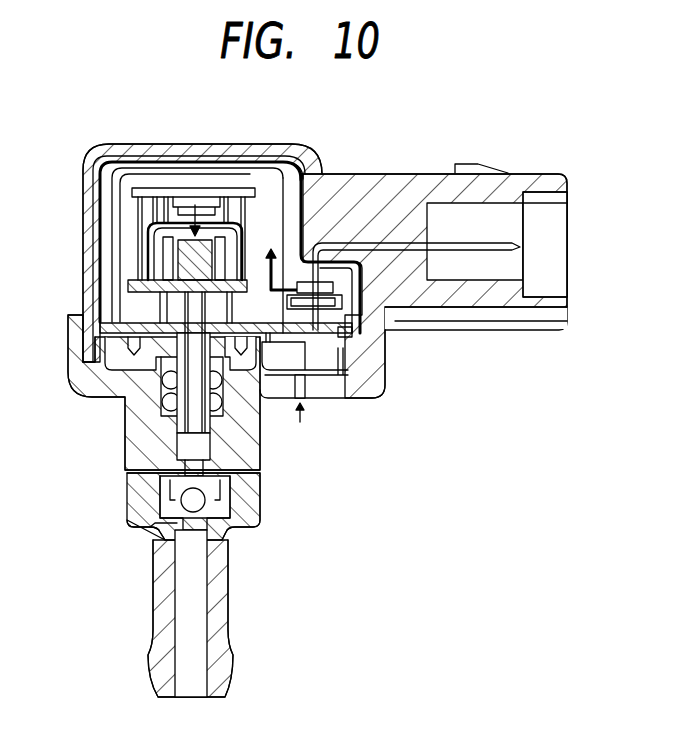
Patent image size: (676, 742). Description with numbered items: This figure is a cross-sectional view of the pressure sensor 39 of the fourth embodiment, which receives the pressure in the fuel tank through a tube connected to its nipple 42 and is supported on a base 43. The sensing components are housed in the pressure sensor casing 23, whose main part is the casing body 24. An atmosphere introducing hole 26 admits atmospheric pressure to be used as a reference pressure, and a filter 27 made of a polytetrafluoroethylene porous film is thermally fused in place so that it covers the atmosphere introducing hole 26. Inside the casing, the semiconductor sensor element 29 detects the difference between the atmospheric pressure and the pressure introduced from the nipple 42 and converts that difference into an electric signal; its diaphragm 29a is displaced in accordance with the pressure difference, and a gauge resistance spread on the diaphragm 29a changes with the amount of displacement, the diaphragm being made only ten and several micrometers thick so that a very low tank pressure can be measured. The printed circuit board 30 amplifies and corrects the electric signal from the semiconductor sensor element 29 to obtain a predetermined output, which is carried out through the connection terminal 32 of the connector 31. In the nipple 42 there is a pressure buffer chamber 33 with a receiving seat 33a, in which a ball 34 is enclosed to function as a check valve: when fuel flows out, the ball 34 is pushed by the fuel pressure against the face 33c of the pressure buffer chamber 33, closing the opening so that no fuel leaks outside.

The pressure sensor casing 23 is at (83, 172).
The casing body 24 is at (400, 178).
The atmosphere introducing hole 26 is at (307, 380).
The filter 27 is at (343, 385).
The semiconductor sensor element 29 is at (148, 226).
The diaphragm 29a is at (160, 247).
The printed circuit board 30 is at (250, 186).
The connector 31 is at (516, 243).
The connection terminal 32 is at (528, 235).
The pressure buffer chamber 33 is at (235, 491).
The receiving seat 33a is at (222, 508).
The face 33c is at (180, 490).
The ball 34 is at (178, 517).
The pressure sensor 39 is at (165, 146).
The nipple 42 is at (228, 600).
The base 43 is at (130, 437).